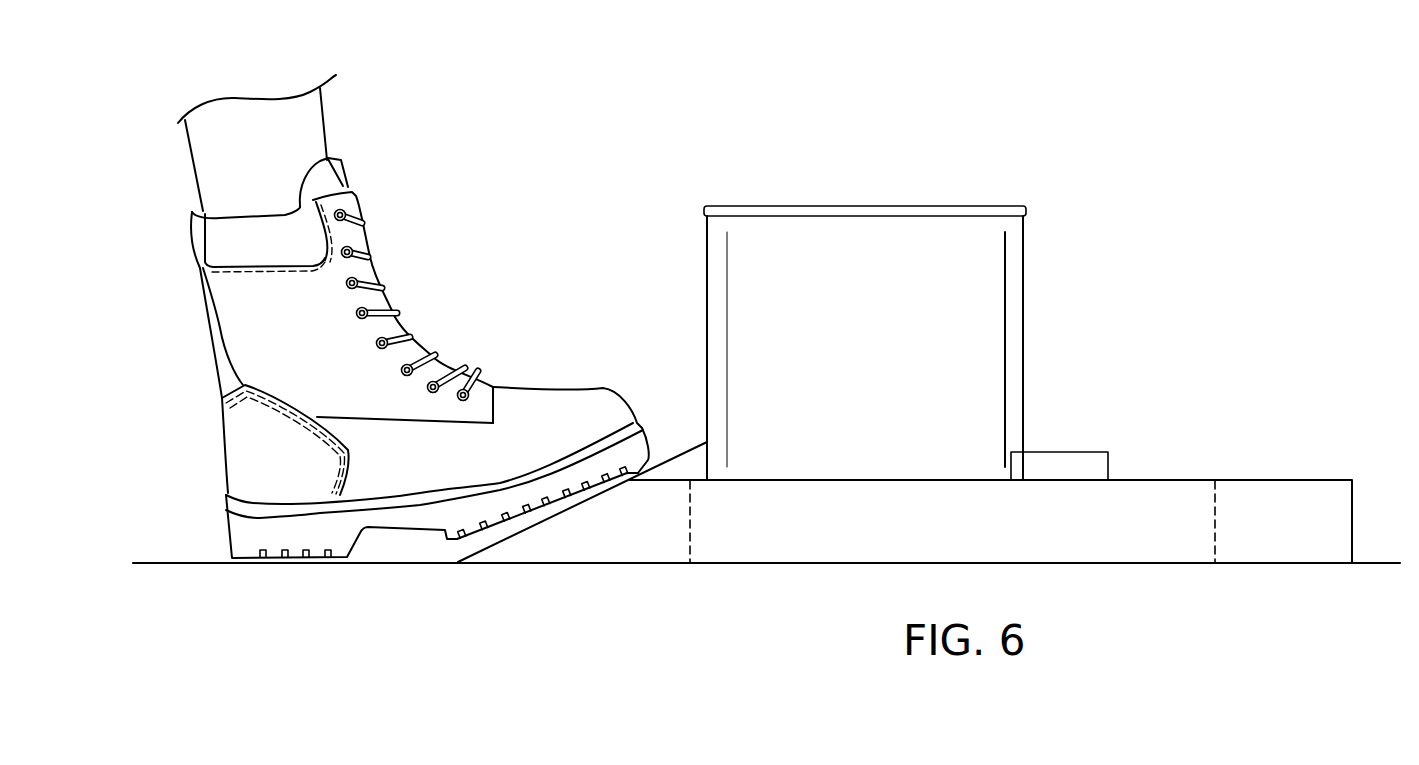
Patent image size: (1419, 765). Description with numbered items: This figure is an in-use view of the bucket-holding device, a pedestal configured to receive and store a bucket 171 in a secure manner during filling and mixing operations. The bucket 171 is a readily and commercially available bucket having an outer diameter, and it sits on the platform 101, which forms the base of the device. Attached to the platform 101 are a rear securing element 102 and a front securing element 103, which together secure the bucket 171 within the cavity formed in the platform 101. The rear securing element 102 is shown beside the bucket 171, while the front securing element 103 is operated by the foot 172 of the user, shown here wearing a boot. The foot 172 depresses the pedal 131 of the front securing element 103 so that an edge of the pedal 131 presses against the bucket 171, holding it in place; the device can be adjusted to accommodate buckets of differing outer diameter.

The platform 101 is at (1256, 498).
The rear securing element 102 is at (1078, 460).
The front securing element 103 is at (662, 473).
The pedal 131 is at (688, 442).
The bucket 171 is at (1025, 297).
The foot 172 is at (440, 350).